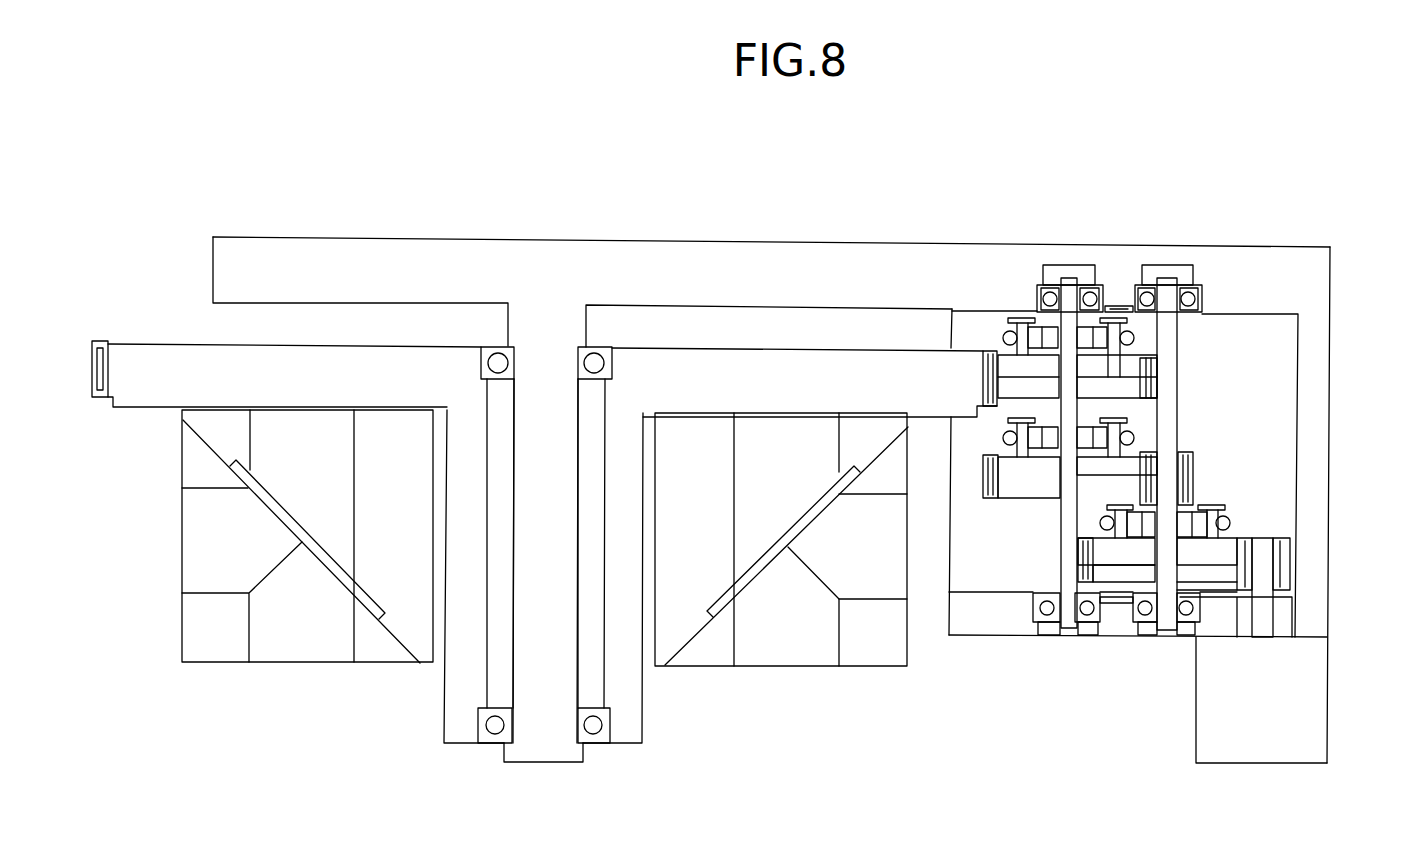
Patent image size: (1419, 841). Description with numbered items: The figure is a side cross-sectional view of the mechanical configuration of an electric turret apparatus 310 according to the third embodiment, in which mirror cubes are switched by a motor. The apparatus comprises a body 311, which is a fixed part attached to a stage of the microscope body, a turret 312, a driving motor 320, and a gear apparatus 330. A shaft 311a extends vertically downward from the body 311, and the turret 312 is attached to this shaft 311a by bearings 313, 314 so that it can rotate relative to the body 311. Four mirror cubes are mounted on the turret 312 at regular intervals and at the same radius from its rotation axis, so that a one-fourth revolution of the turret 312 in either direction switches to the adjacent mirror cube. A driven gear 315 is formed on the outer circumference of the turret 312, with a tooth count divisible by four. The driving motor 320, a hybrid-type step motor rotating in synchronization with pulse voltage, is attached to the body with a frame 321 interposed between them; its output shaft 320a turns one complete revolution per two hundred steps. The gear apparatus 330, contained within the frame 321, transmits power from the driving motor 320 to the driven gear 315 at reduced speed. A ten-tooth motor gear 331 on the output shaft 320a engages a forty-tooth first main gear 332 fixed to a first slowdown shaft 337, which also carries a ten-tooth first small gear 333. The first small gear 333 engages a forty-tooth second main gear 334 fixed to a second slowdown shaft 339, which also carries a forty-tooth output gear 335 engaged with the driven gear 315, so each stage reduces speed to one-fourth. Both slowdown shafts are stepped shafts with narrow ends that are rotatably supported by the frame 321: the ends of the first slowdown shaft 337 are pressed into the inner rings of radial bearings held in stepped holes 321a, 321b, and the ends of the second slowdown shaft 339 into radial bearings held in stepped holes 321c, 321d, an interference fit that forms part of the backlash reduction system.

The turret apparatus 310 is at (843, 200).
The body 311 is at (661, 251).
The shaft 311a is at (530, 764).
The turret 312 is at (134, 348).
The bearing 313 is at (600, 745).
The bearing 314 is at (612, 368).
The driven gear 315 is at (100, 400).
The driving motor 320 is at (1324, 707).
The output shaft 320a is at (1264, 617).
The frame 321 is at (1330, 360).
The stepped hole 321a is at (1138, 624).
The stepped hole 321b is at (1200, 287).
The stepped hole 321c is at (1038, 624).
The stepped hole 321d is at (1100, 285).
The gear apparatus 330 is at (1200, 426).
The motor gear 331 is at (1292, 563).
The first main gear 332 is at (1232, 540).
The first small gear 333 is at (1194, 479).
The second main gear 334 is at (1018, 492).
The output gear 335 is at (1132, 390).
The first slowdown shaft 337 is at (1178, 363).
The second slowdown shaft 339 is at (1060, 574).